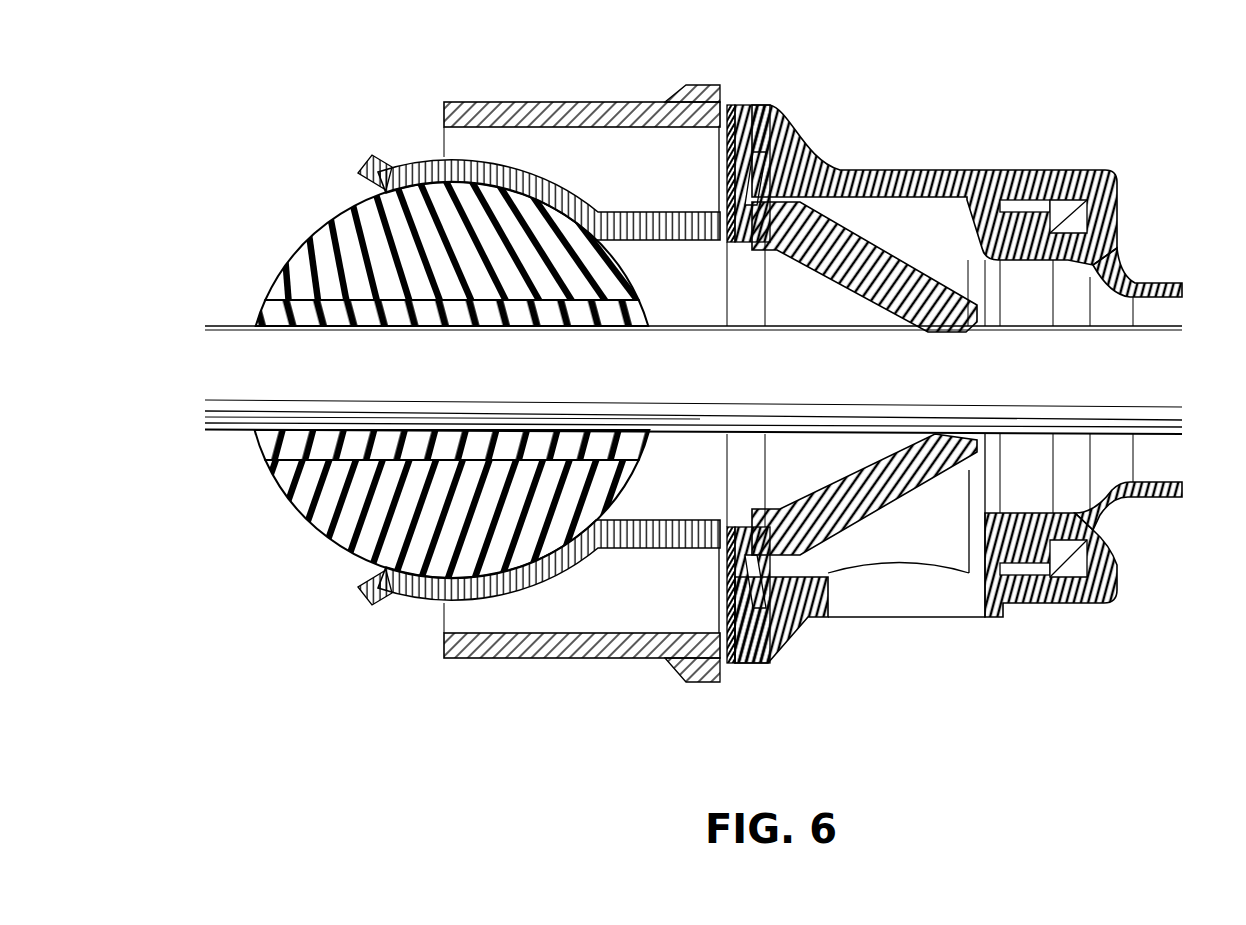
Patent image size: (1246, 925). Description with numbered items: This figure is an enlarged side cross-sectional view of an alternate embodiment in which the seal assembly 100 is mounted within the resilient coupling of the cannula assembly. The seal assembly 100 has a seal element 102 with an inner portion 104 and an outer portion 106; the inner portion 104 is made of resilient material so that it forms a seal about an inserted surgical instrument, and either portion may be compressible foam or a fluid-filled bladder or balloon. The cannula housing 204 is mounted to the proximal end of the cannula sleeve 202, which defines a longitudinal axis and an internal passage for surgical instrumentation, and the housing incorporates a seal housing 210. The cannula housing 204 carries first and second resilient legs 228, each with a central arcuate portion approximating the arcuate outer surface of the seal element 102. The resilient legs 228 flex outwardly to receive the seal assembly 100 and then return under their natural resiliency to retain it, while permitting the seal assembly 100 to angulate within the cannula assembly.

The seal assembly 100 is at (288, 518).
The seal element 102 is at (303, 238).
The inner portion 104 is at (392, 313).
The outer portion 106 is at (372, 540).
The resilient legs 228 is at (502, 170).
The seal housing 210 is at (553, 650).
The cannula housing 204 is at (1043, 166).
The cannula sleeve 202 is at (1158, 290).